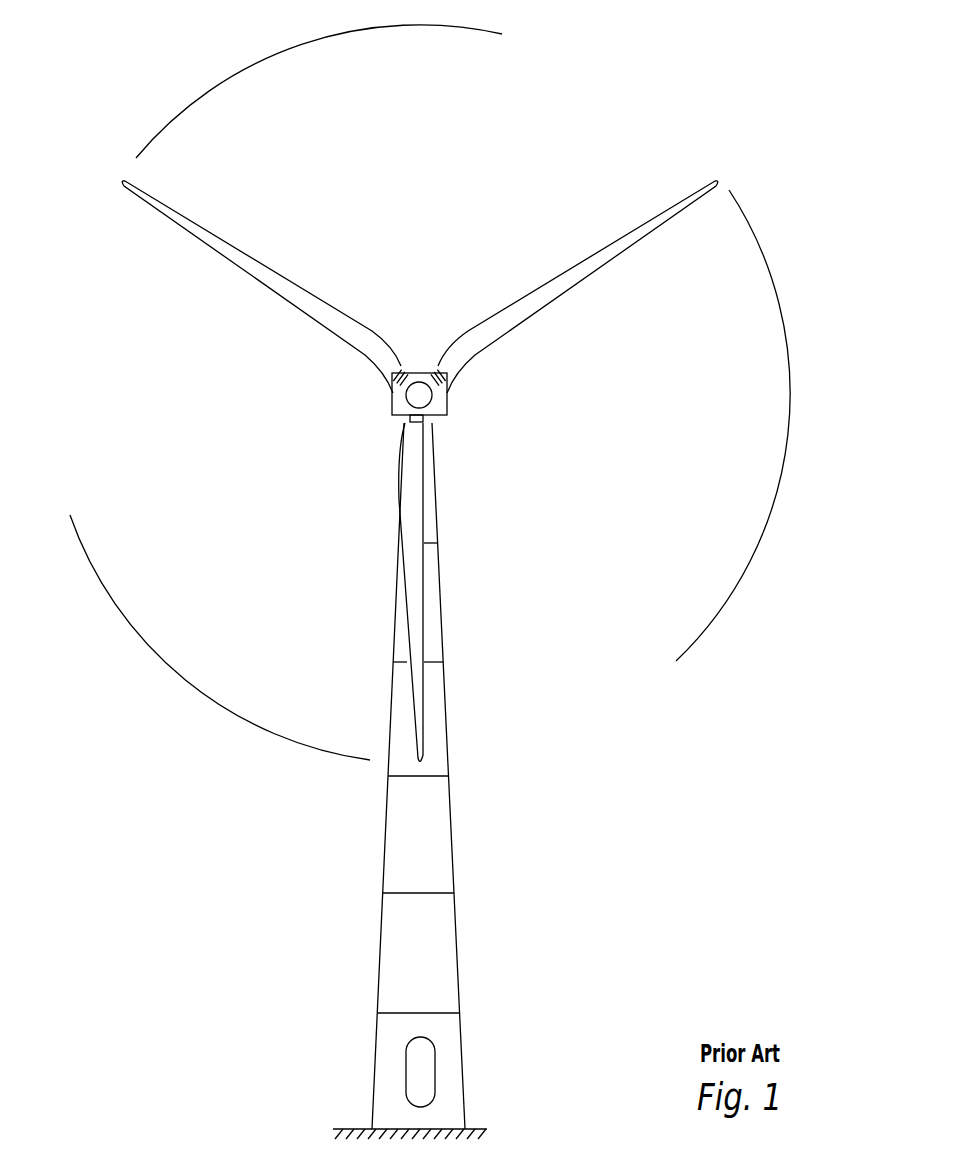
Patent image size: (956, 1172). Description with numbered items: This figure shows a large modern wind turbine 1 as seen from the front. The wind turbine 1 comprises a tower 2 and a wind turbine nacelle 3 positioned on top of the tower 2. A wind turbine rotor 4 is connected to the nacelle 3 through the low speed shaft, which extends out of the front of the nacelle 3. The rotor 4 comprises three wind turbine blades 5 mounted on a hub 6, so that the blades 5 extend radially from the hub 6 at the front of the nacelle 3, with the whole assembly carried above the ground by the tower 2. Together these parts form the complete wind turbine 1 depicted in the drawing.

The wind turbine 1 is at (430, 582).
The tower 2 is at (443, 848).
The wind turbine nacelle 3 is at (443, 407).
The wind turbine rotor 4 is at (400, 397).
The wind turbine blades 5 is at (422, 628).
The hub 6 is at (419, 395).